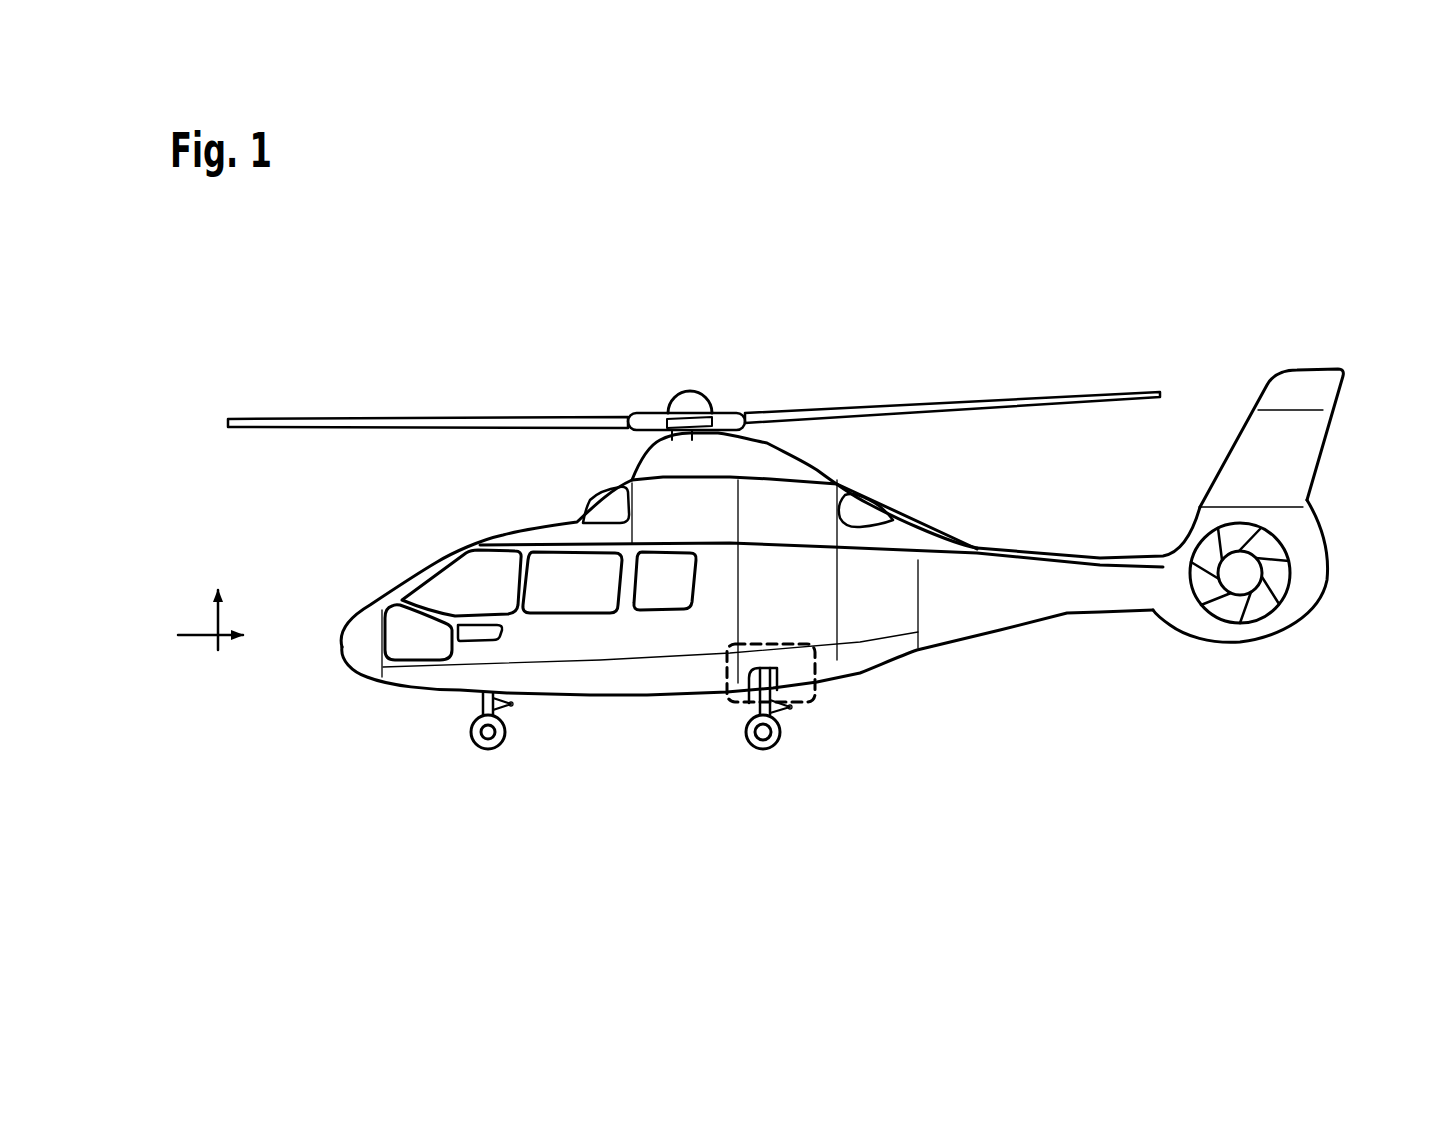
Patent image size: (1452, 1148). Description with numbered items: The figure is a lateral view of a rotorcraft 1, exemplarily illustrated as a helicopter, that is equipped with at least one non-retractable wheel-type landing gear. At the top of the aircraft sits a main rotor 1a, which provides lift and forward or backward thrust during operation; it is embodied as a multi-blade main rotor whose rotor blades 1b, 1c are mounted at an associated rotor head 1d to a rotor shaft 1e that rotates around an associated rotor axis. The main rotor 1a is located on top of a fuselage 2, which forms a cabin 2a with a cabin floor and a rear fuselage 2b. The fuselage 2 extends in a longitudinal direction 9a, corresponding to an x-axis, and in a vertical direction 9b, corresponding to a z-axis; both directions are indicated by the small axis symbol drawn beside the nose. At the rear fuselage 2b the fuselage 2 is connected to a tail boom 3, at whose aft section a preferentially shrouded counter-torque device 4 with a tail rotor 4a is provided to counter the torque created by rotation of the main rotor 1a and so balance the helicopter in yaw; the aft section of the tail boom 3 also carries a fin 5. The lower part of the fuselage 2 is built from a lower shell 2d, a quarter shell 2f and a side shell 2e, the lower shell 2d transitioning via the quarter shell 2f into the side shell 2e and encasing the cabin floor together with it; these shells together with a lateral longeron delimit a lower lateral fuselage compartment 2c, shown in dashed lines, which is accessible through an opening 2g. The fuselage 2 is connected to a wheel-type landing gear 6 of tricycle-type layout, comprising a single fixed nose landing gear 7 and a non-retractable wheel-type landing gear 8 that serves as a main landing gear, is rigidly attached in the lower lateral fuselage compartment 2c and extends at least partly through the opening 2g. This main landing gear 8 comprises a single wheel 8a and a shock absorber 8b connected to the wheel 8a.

The rotorcraft 1 is at (392, 290).
The main rotor 1a is at (493, 405).
The rotor blade 1b is at (330, 420).
The rotor blade 1c is at (1133, 396).
The rotor head 1d is at (722, 390).
The rotor shaft 1e is at (673, 437).
The fuselage 2 is at (587, 635).
The cabin 2a is at (432, 571).
The rear fuselage 2b is at (928, 660).
The lower lateral fuselage compartment 2c is at (802, 705).
The lower shell 2d is at (637, 706).
The side shell 2e is at (795, 607).
The quarter shell 2f is at (692, 672).
The opening 2g is at (742, 702).
The tail boom 3 is at (1060, 575).
The counter-torque device 4 is at (1306, 552).
The tail rotor 4a is at (1252, 604).
The fin 5 is at (1293, 418).
The wheel-type landing gear 6 is at (445, 723).
The nose landing gear 7 is at (492, 770).
The non-retractable wheel-type landing gear 8 is at (769, 765).
The wheel 8a is at (752, 745).
The shock absorber 8b is at (798, 673).
The longitudinal direction 9a is at (197, 636).
The vertical direction 9b is at (215, 610).